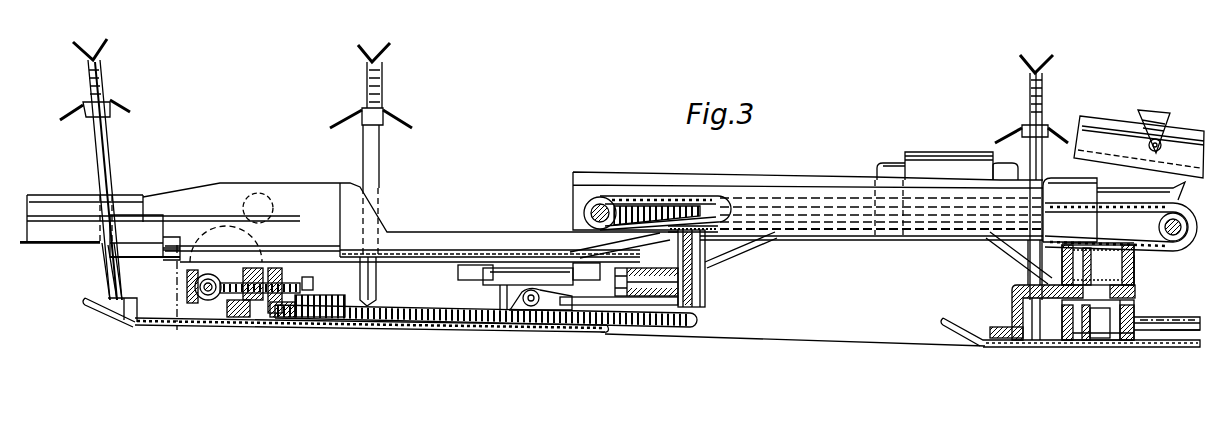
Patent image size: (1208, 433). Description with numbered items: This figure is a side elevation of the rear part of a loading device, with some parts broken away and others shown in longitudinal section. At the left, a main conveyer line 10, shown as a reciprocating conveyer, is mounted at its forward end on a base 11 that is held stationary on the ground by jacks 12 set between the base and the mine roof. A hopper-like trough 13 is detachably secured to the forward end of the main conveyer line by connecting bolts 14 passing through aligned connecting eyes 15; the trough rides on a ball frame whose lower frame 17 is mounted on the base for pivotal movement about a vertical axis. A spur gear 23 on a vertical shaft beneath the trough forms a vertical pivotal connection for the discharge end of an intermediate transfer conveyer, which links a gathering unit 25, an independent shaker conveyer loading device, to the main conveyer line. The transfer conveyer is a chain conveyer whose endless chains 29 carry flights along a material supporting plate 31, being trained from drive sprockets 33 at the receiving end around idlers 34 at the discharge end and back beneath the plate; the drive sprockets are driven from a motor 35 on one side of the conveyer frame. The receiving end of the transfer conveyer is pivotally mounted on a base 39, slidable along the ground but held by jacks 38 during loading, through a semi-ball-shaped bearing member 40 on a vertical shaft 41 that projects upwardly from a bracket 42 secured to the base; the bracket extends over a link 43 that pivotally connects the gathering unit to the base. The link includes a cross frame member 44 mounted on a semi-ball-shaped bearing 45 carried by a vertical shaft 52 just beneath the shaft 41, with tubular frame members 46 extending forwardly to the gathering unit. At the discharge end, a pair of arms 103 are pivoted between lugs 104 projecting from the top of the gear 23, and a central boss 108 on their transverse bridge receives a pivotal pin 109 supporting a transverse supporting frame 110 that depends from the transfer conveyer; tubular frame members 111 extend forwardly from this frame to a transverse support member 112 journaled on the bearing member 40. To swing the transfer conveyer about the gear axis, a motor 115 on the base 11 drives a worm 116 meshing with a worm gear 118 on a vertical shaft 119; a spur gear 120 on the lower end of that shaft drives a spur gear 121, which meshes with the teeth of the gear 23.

The main conveyer line 10 is at (88, 193).
The base 11 is at (95, 318).
The jacks 12 is at (110, 182).
The hopper-like trough 13 is at (302, 183).
The connecting bolts 14 is at (100, 263).
The connecting eyes 15 is at (158, 266).
The lower frame 17 is at (456, 274).
The spur gear 23 is at (606, 333).
The gathering unit 25 is at (1135, 113).
The endless chains 29 is at (681, 196).
The material supporting plate 31 is at (642, 200).
The drive sprockets 33 is at (1138, 253).
The idlers 34 is at (610, 200).
The motor 35 is at (972, 156).
The jacks 38 is at (1028, 109).
The base 39 is at (960, 338).
The semi-ball-shaped bearing member 40 is at (1134, 282).
The vertical shaft 41 is at (1136, 270).
The bracket 42 is at (1012, 290).
The link 43 is at (1164, 315).
The cross frame member 44 is at (1072, 340).
The semi-ball-shaped bearing 45 is at (1128, 341).
The tubular frame members 46 is at (1162, 342).
The vertical shaft 52 is at (1098, 340).
The arms 103 is at (690, 304).
The lugs 104 is at (505, 328).
The central boss 108 is at (706, 297).
The pivotal pin 109 is at (648, 270).
The transverse supporting frame 110 is at (707, 288).
The tubular frame members 111 is at (736, 252).
The transverse support member 112 is at (1018, 271).
The motor 115 is at (232, 227).
The worm 116 is at (218, 274).
The worm gear 118 is at (277, 277).
The vertical shaft 119 is at (276, 270).
The spur gear 120 is at (248, 318).
The spur gear 121 is at (344, 318).